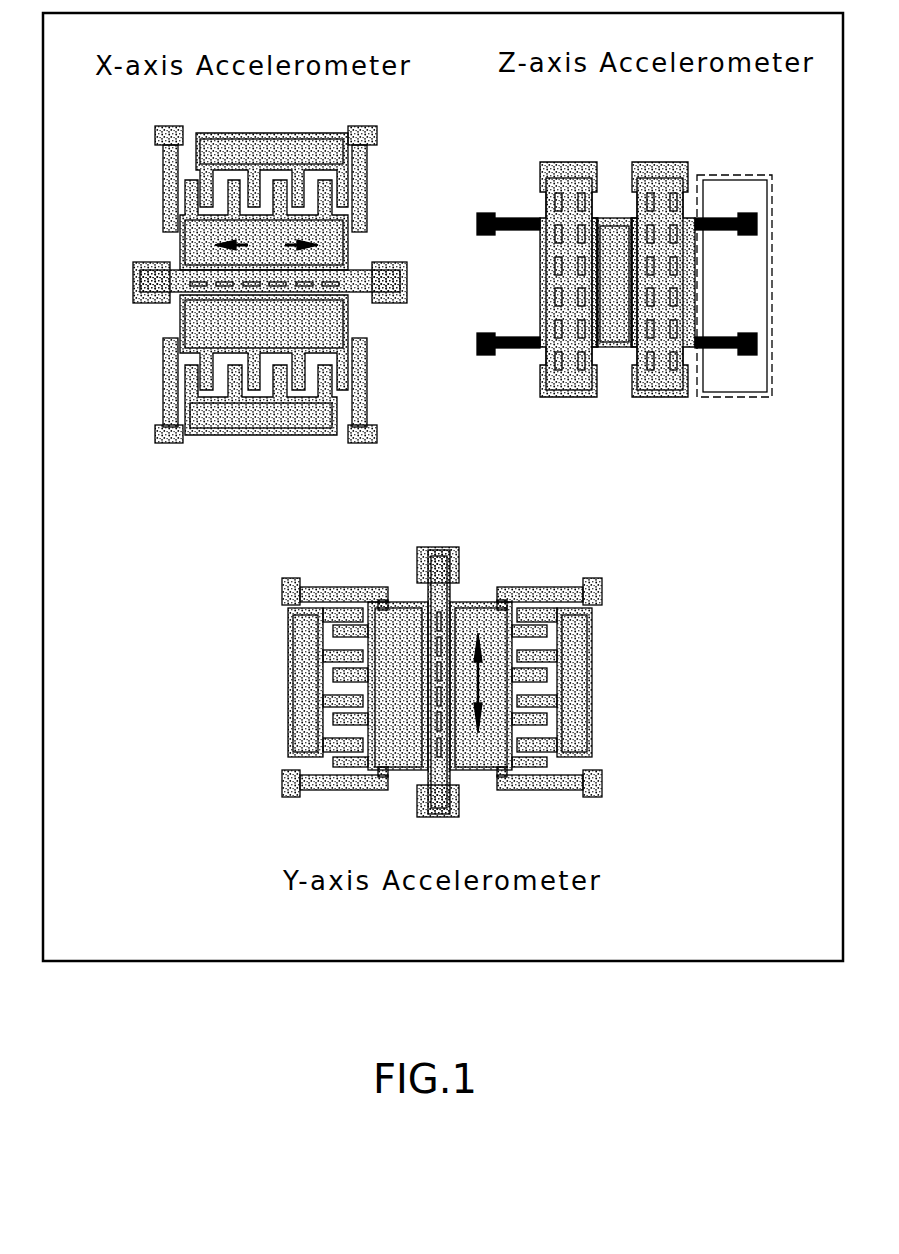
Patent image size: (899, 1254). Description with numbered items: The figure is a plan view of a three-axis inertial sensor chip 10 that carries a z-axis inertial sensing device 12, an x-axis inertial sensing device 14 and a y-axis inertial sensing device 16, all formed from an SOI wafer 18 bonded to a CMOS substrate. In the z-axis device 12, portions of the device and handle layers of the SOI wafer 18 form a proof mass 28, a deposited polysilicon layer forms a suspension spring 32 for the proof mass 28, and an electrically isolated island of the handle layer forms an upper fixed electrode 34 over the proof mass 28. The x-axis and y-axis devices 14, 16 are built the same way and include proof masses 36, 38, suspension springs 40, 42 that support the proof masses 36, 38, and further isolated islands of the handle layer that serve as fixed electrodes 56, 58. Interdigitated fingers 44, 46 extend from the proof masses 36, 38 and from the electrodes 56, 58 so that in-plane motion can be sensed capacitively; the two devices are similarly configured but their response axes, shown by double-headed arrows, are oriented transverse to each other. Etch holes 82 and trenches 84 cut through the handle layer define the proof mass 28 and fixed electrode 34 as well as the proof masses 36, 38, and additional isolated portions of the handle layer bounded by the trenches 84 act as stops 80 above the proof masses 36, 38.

The three-axis inertial sensor chip 10 is at (197, 1025).
The z-axis inertial sensing device 12 is at (731, 447).
The x-axis inertial sensing device 14 is at (129, 493).
The y-axis inertial sensing device 16 is at (204, 730).
The SOI wafer 18 is at (707, 723).
The proof mass 28 is at (613, 342).
The suspension spring 32 is at (532, 333).
The upper fixed electrode 34 is at (548, 205).
The proof mass 36 is at (210, 253).
The proof mass 38 is at (405, 610).
The suspension spring 40 is at (170, 208).
The suspension spring 42 is at (343, 588).
The interdigitated fingers 44 is at (250, 385).
The interdigitated fingers 46 is at (547, 673).
The fixed electrode 56 is at (252, 157).
The fixed electrode 58 is at (303, 705).
The stop 80 is at (385, 287).
The etch hole 82 is at (298, 285).
The trench 84 is at (333, 293).